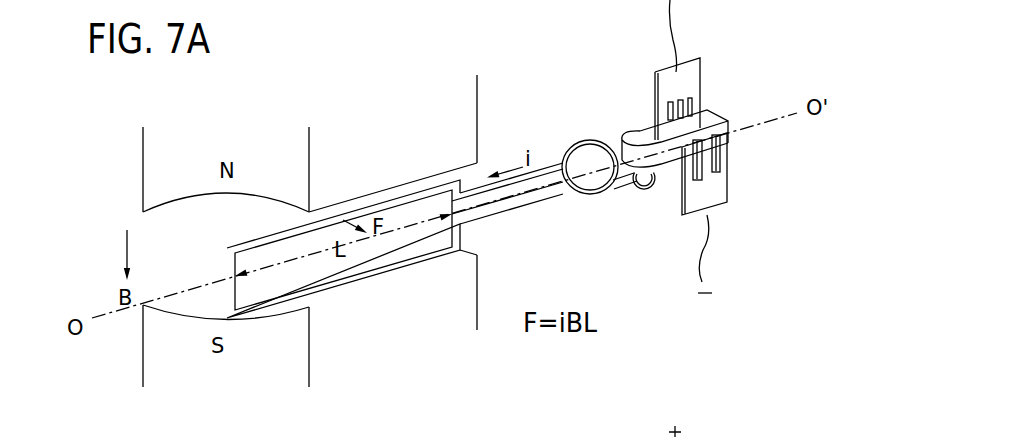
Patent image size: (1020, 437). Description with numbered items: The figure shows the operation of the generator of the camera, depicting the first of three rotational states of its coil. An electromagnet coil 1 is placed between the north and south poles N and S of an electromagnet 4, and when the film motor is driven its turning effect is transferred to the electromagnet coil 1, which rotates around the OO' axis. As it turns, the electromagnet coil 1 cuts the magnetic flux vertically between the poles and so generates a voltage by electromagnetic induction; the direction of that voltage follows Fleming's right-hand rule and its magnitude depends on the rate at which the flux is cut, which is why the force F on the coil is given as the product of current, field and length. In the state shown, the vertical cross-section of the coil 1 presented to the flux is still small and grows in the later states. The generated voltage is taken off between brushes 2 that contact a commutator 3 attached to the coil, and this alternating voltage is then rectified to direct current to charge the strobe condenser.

The electromagnet coil 1 is at (227, 261).
The brushes 2 is at (697, 83).
The commutator 3 is at (637, 133).
The electromagnet 4 is at (158, 169).